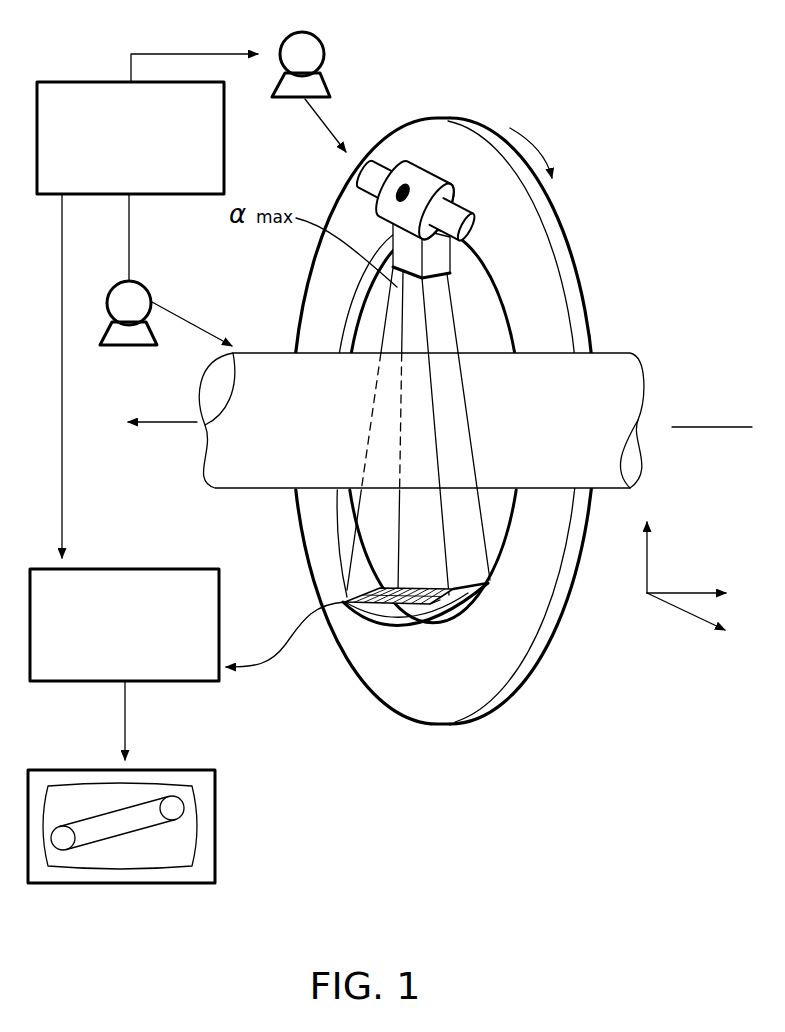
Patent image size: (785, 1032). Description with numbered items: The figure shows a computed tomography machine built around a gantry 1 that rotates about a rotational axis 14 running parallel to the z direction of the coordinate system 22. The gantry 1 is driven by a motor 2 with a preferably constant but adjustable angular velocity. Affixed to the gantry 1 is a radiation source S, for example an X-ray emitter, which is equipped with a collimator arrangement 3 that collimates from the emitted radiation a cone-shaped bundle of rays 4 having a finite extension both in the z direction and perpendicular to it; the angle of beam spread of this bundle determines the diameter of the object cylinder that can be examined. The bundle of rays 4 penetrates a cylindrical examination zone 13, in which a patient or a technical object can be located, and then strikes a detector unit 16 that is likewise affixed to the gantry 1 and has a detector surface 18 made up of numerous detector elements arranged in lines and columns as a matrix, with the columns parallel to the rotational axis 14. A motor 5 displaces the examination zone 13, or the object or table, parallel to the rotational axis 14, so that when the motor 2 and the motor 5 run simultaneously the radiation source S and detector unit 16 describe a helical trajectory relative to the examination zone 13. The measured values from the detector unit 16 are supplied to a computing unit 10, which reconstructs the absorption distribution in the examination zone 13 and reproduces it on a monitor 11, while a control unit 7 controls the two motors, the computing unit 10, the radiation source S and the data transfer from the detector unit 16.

The gantry 1 is at (562, 567).
The motor 2 is at (324, 52).
The collimator arrangement 3 is at (451, 272).
The bundle of rays 4 is at (448, 529).
The motor 5 is at (152, 293).
The control unit 7 is at (72, 82).
The computing unit 10 is at (126, 568).
The monitor 11 is at (172, 770).
The examination zone 13 is at (263, 367).
The rotational axis 14 is at (160, 425).
The detector unit 16 is at (397, 627).
The detector surface 18 is at (418, 612).
The coordinate system 22 is at (690, 553).
The radiation source S is at (407, 167).